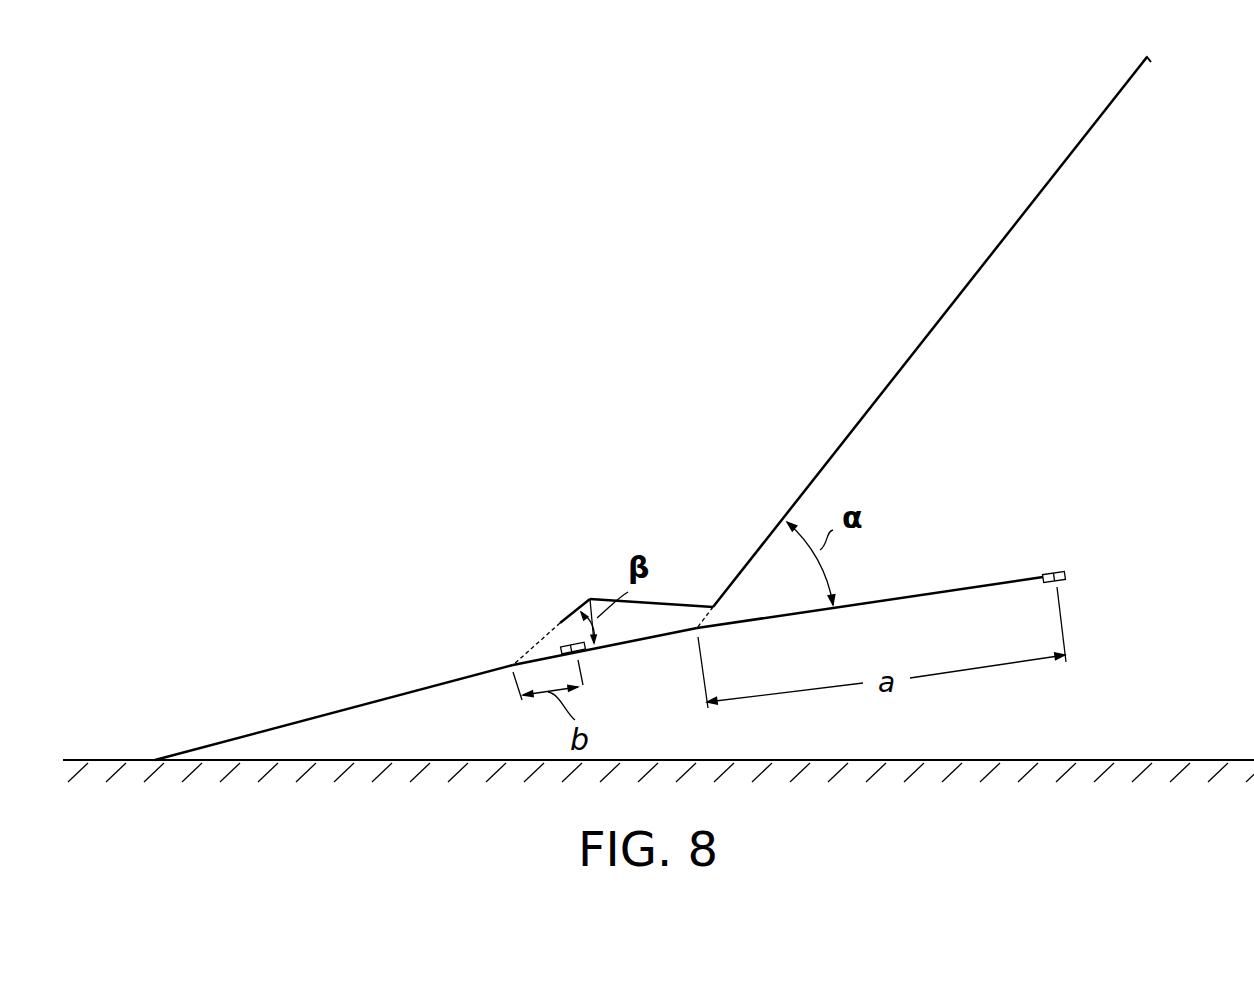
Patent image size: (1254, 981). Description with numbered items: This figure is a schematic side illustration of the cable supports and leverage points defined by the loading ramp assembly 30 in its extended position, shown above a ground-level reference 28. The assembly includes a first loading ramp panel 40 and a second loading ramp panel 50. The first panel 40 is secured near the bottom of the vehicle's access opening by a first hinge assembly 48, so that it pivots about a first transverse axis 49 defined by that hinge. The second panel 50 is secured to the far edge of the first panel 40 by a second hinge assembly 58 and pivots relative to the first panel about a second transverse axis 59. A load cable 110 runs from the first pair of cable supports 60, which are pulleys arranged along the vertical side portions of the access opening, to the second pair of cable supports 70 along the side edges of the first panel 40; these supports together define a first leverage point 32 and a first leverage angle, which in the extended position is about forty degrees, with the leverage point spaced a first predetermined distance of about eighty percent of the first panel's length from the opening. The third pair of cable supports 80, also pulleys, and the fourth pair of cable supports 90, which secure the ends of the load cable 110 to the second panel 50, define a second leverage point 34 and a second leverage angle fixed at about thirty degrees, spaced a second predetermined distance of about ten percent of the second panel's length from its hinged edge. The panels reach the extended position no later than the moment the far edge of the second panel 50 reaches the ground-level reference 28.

The ground-level reference 28 is at (972, 760).
The loading ramp assembly 30 is at (407, 588).
The first leverage point 32 is at (697, 630).
The second leverage point 34 is at (512, 665).
The first loading ramp panel 40 is at (907, 594).
The first hinge assembly 48 is at (1063, 570).
The first transverse axis 49 is at (1065, 580).
The second loading ramp panel 50 is at (337, 710).
The second hinge assembly 58 is at (587, 648).
The second transverse axis 59 is at (578, 657).
The first pair of cable supports 60 is at (1150, 60).
The second pair of cable supports 70 is at (713, 607).
The third pair of cable supports 80 is at (590, 599).
The fourth pair of cable supports 90 is at (560, 622).
The load cable 110 is at (930, 337).